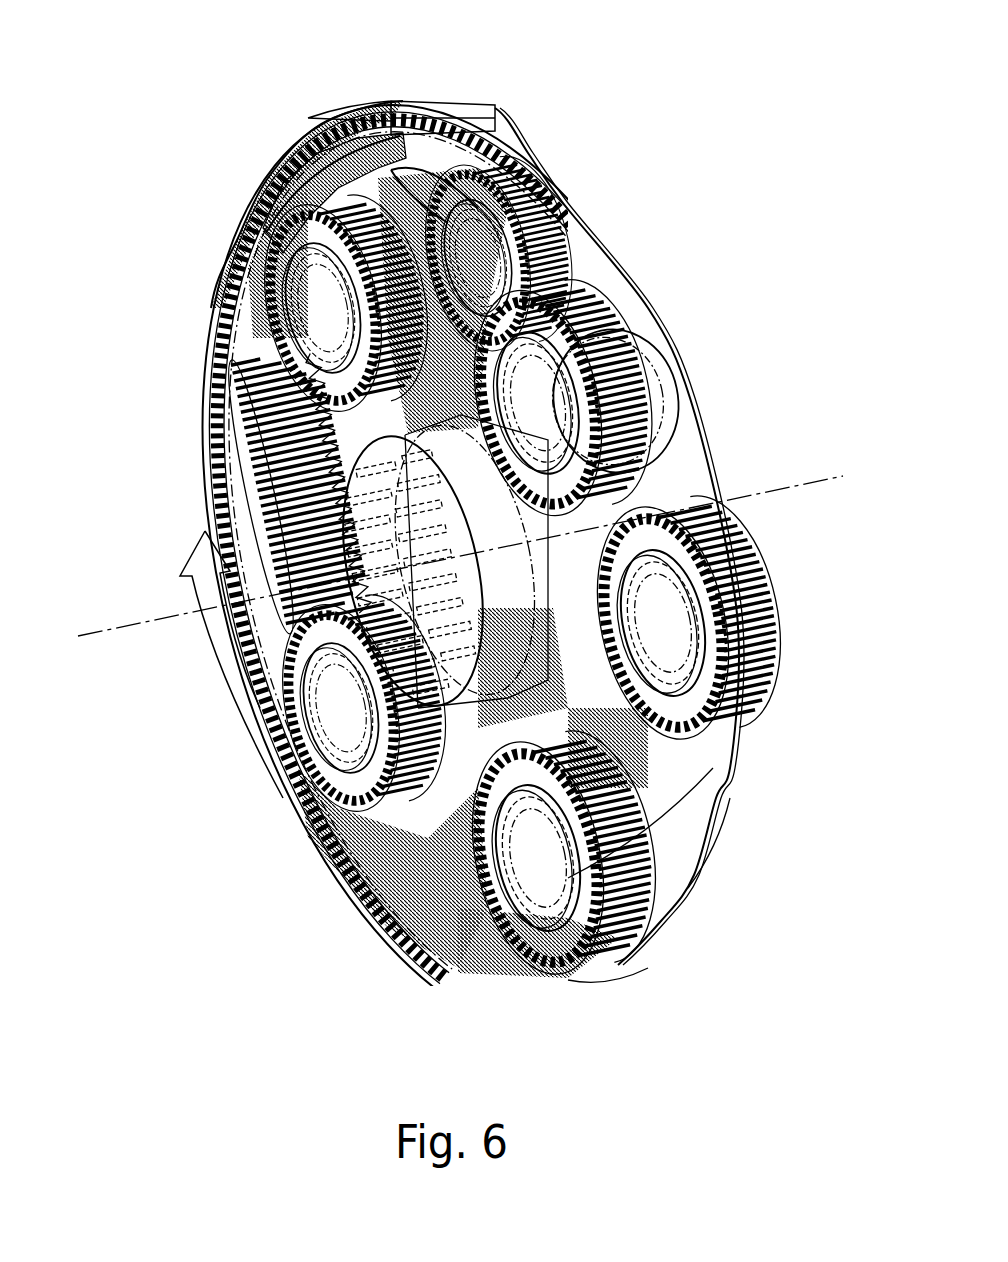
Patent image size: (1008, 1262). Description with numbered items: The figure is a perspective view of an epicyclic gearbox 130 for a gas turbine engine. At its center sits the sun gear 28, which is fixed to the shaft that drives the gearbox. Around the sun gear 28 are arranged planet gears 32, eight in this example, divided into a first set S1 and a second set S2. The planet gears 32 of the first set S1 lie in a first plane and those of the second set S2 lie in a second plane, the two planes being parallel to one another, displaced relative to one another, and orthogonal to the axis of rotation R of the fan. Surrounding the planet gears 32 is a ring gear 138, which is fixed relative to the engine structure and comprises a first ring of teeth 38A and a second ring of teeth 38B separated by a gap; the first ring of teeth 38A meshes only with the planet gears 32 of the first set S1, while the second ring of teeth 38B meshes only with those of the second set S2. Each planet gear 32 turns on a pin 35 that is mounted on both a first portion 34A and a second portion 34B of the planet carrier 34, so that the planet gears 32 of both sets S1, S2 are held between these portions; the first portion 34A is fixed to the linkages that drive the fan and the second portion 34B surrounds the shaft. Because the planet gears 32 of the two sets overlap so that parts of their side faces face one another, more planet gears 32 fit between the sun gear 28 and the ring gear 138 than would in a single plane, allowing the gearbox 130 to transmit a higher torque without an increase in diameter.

The gearbox 130 is at (163, 328).
The ring gear 138 is at (368, 96).
The first ring of teeth 38A is at (303, 137).
The second ring of teeth 38B is at (383, 162).
The planet gear 32 is at (520, 145).
The pin 35 is at (555, 220).
The planet carrier 34 is at (203, 420).
The first portion 34A is at (235, 372).
The second portion 34B is at (690, 800).
The sun gear 28 is at (340, 522).
The axis of rotation R is at (800, 470).
The first set S1 is at (601, 984).
The second set S2 is at (692, 878).